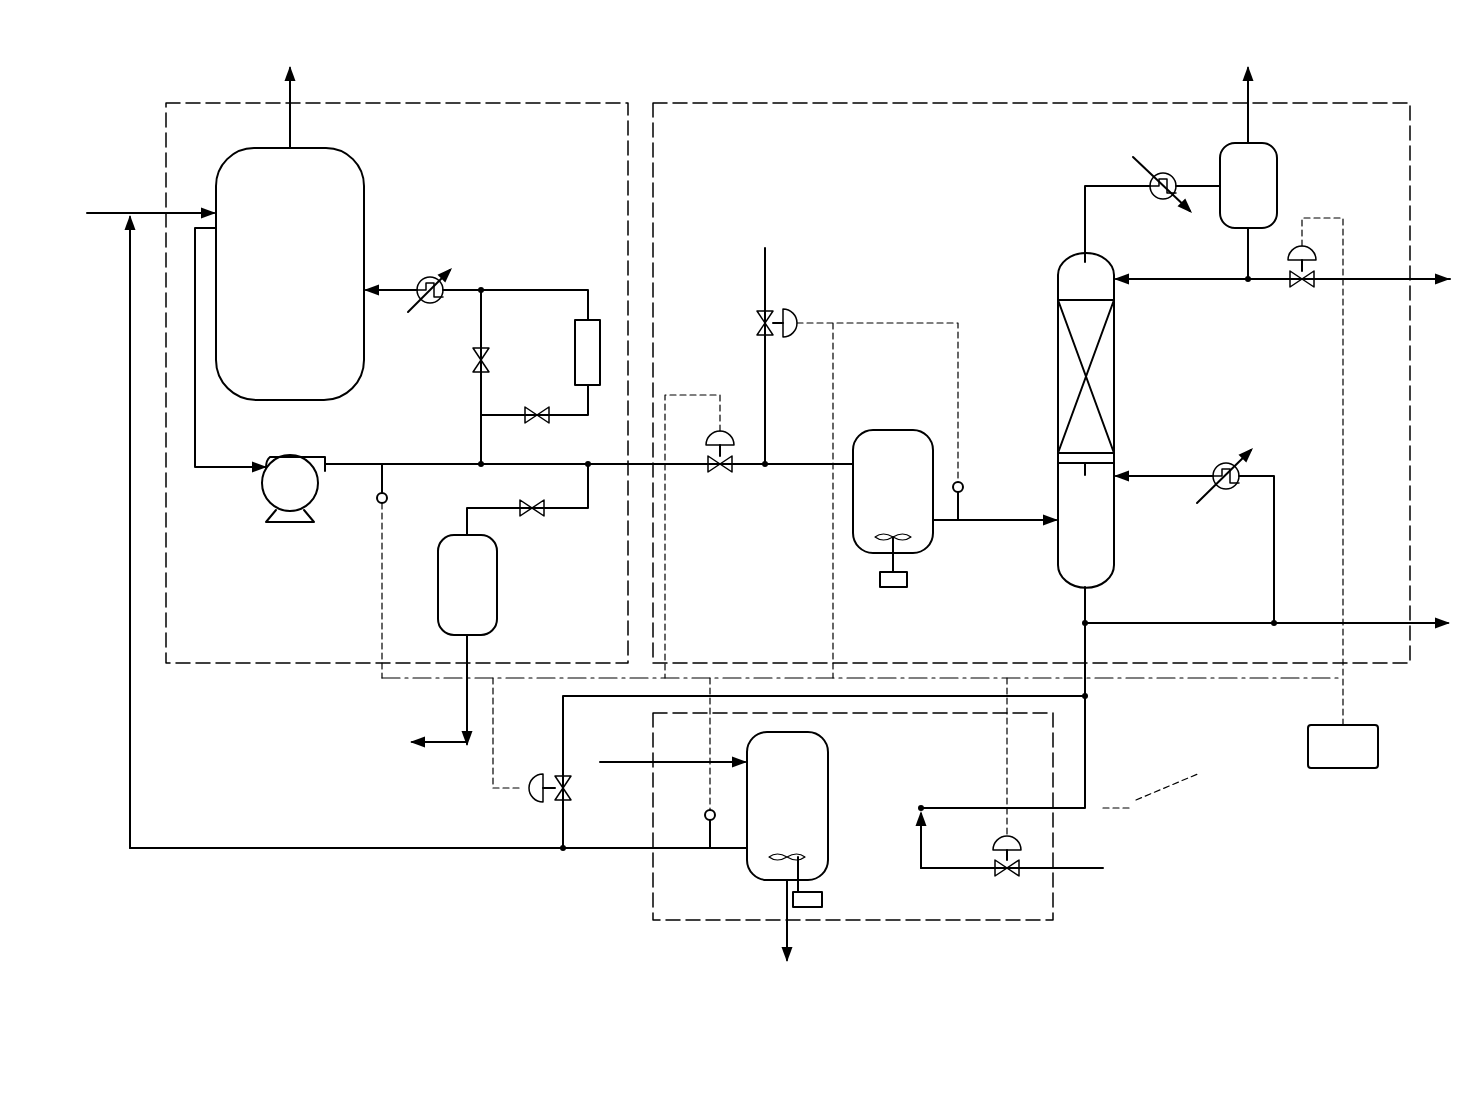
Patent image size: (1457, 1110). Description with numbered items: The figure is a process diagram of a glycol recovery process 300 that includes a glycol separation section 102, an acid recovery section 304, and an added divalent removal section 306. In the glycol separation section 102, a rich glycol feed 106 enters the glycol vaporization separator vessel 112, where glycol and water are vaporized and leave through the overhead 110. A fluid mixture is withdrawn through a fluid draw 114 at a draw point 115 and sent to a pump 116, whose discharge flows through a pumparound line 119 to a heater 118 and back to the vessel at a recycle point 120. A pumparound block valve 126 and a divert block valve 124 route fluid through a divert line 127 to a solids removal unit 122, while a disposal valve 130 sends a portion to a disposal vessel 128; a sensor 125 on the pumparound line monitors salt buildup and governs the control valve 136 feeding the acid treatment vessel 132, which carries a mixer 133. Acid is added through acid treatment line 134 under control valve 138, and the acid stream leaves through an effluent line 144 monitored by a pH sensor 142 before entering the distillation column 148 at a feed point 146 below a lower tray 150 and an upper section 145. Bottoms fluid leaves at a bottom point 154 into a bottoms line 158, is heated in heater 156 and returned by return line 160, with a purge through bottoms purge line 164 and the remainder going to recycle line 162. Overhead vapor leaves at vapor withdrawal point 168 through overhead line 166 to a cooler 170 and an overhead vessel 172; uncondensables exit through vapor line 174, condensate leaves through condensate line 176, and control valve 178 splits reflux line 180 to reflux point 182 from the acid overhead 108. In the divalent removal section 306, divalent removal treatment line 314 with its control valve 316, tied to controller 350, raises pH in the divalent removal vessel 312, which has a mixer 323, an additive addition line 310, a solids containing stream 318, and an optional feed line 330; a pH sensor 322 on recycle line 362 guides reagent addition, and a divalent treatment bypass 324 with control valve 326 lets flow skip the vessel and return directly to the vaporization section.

The process 300 is at (232, 900).
The glycol separation section 102 is at (553, 102).
The second section 304 is at (1312, 102).
The divalent removal section 306 is at (978, 922).
The feed 106 is at (106, 213).
The acid overhead 108 is at (1385, 278).
The overhead 110 is at (292, 132).
The glycol vaporization separator vessel 112 is at (365, 198).
The fluid draw 114 is at (200, 400).
The draw point 115 is at (216, 227).
The pump 116 is at (262, 484).
The heater 118 is at (425, 278).
The pumparound line 119 is at (440, 462).
The recycle point 120 is at (365, 294).
The solids removal unit 122 is at (575, 332).
The divert block valve 124 is at (530, 420).
The sensor 125 is at (390, 498).
The pumparound block valve 126 is at (490, 362).
The divert line 127 is at (548, 290).
The disposal vessel 128 is at (498, 600).
The disposal valve 130 is at (532, 518).
The acid treatment vessel 132 is at (893, 430).
The mixer 133 is at (893, 588).
The acid treatment line 134 is at (765, 275).
The control valve 136 is at (718, 475).
The control valve 138 is at (755, 323).
The pH sensor 142 is at (962, 484).
The effluent line 144 is at (983, 522).
The column top section 145 is at (1058, 284).
The feed point 146 is at (1056, 522).
The distillation column 148 is at (1117, 357).
The lower tray 150 is at (1087, 466).
The bottom point 154 is at (1082, 590).
The heater 156 is at (1223, 462).
The bottoms line 158 is at (1208, 622).
The return line 160 is at (1163, 476).
The recycle line 162 is at (1087, 748).
The bottoms purge line 164 is at (1378, 622).
The overhead line 166 is at (1084, 202).
The vapor withdrawal point 168 is at (1084, 252).
The cooler 170 is at (1166, 172).
The overhead vessel 172 is at (1278, 186).
The vapor line 174 is at (1250, 130).
The condensate line 176 is at (1247, 252).
The control valve 178 is at (1300, 288).
The reflux line 180 is at (1220, 288).
The reflux point 182 is at (1116, 283).
The additive addition line 310 is at (628, 760).
The divalent removal vessel 312 is at (830, 780).
The divalent removal treatment line 314 is at (917, 850).
The divalent removal treatment control valve 316 is at (1000, 875).
The solids containing stream 318 is at (785, 905).
The pH sensor 322 is at (706, 814).
The mixer 323 is at (823, 900).
The divalent treatment bypass 324 is at (566, 832).
The control valve 326 is at (572, 790).
The feed line 330 is at (862, 743).
The controller 350 is at (1343, 746).
The recycle line 362 is at (432, 850).